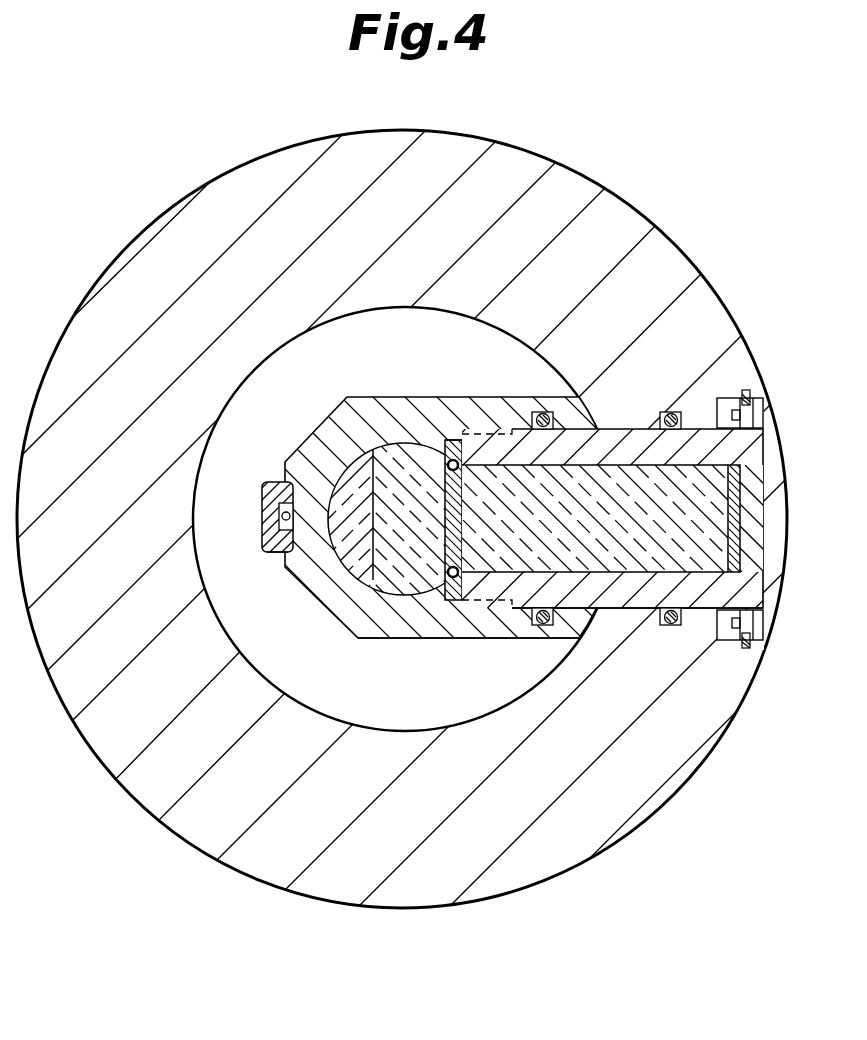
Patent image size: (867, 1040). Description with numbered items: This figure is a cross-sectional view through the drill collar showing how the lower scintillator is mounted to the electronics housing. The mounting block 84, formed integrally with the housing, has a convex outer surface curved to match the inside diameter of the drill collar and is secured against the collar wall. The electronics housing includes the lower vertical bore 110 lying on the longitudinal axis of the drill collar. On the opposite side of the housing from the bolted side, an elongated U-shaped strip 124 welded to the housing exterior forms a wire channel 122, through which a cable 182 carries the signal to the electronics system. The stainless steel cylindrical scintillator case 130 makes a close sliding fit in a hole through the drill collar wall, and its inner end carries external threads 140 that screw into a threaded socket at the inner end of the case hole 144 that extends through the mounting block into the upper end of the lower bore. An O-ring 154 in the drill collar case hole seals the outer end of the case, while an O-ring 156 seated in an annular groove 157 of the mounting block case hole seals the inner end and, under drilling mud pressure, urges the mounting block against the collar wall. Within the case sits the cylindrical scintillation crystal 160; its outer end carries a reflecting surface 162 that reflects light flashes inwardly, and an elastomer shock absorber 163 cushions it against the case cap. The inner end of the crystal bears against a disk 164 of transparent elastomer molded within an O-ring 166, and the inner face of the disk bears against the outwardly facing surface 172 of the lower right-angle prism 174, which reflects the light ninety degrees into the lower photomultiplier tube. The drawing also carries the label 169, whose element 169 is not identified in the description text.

The mounting block 84 is at (520, 638).
The lower vertical bore 110 is at (348, 472).
The wire channel 122 is at (270, 552).
The U-shaped strip 124 is at (262, 500).
The scintillator case 130 is at (613, 610).
The external threads 140 is at (497, 638).
The case hole 144 is at (455, 440).
The O-ring 154 is at (712, 397).
The O-ring 156 is at (548, 410).
The annular groove 157 is at (672, 410).
The scintillation crystal 160 is at (695, 548).
The reflecting surface 162 is at (733, 513).
The shock absorber 163 is at (765, 425).
The disk 164 is at (463, 501).
The O-ring 166 is at (444, 572).
The seal rings 169 is at (446, 438).
The outwardly facing surface 172 is at (445, 477).
The lower right-angle prism 174 is at (385, 467).
The cable 182 is at (280, 516).